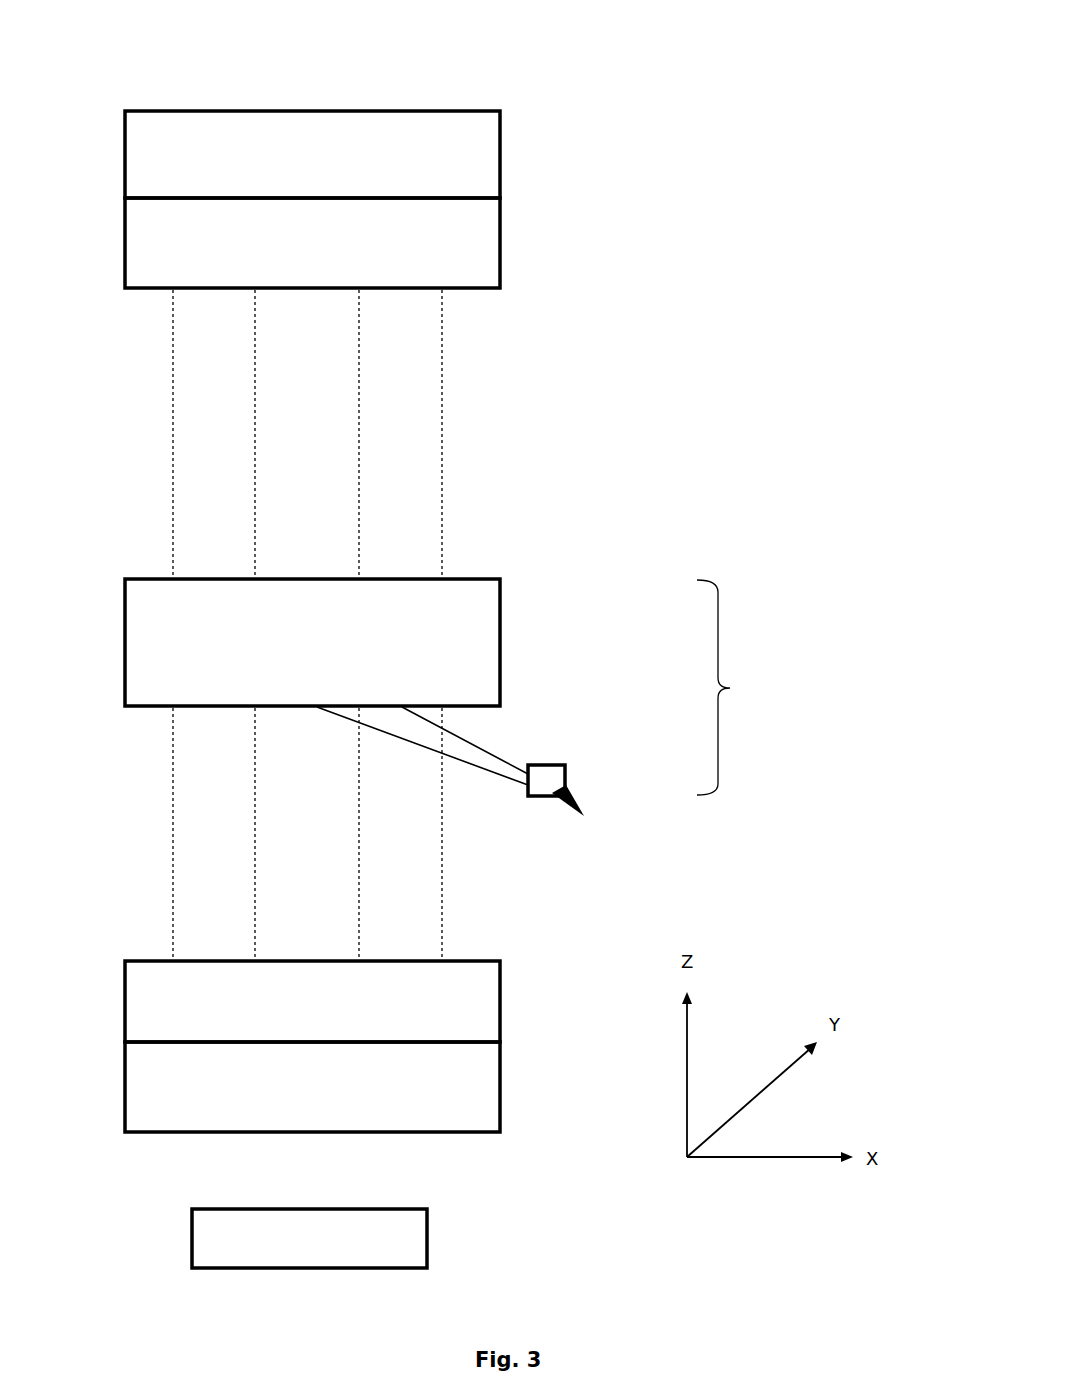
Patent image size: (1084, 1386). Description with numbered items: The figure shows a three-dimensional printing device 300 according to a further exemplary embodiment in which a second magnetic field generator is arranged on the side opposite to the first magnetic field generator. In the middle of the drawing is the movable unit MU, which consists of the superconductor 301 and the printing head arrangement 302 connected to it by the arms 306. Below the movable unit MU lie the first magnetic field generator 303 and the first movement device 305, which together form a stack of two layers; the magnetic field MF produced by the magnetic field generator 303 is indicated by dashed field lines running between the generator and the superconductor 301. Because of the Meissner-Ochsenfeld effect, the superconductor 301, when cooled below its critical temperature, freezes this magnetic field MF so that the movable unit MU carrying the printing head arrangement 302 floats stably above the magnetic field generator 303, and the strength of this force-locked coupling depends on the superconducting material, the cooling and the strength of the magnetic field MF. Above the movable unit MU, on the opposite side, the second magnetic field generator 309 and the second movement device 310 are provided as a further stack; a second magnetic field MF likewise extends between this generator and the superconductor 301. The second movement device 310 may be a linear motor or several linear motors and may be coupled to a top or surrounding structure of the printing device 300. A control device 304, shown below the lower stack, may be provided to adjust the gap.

The 3D printing device 300 is at (252, 80).
The superconductor 301 is at (500, 635).
The printing head arrangement 302 is at (568, 776).
The magnetic field generator 303 is at (503, 1030).
The control device 304 is at (429, 1239).
The movement device 305 is at (503, 1105).
The arms 306 is at (496, 755).
The second magnetic field generator 309 is at (503, 246).
The second movement device 310 is at (503, 175).
The magnetic field MF is at (443, 457).
The movable unit MU is at (748, 687).